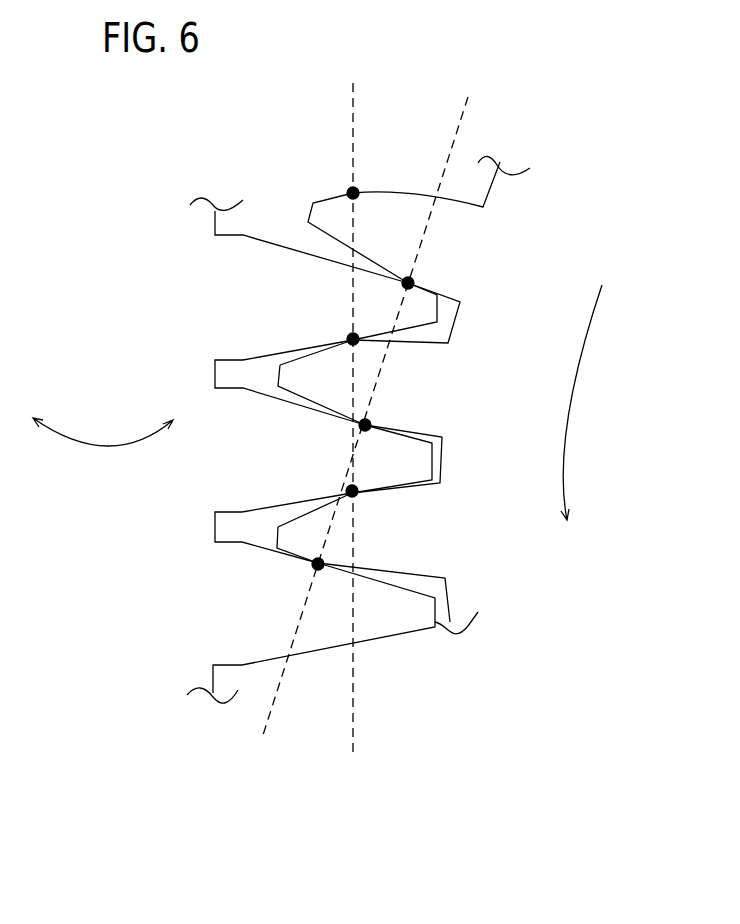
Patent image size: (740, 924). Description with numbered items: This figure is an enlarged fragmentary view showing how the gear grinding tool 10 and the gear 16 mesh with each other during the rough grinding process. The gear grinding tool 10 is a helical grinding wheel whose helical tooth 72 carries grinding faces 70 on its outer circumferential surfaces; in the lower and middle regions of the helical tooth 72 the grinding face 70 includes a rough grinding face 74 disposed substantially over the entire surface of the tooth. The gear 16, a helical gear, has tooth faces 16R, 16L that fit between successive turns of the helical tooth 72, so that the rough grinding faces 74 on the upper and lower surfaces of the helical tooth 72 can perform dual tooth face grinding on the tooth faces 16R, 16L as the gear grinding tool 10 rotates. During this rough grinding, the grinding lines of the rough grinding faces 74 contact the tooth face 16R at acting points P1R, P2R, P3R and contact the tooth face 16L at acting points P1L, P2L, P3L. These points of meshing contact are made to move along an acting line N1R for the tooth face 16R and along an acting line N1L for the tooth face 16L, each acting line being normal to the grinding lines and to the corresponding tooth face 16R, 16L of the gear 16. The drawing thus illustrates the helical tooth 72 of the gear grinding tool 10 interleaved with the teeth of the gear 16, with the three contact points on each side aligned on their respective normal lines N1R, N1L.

The gear grinding tool 10 is at (168, 192).
The grinding face 70 is at (358, 466).
The rough grinding face 74 is at (277, 250).
The helical tooth 72 is at (258, 445).
The gear 16 is at (557, 251).
The tooth face 16L is at (373, 190).
The tooth face 16R is at (340, 247).
The acting line N1L is at (352, 97).
The acting line N1R is at (457, 133).
The acting point P1L is at (353, 193).
The acting point P1R is at (408, 283).
The acting point P2L is at (353, 338).
The acting point P2R is at (365, 425).
The acting point P3L is at (352, 490).
The acting point P3R is at (318, 564).